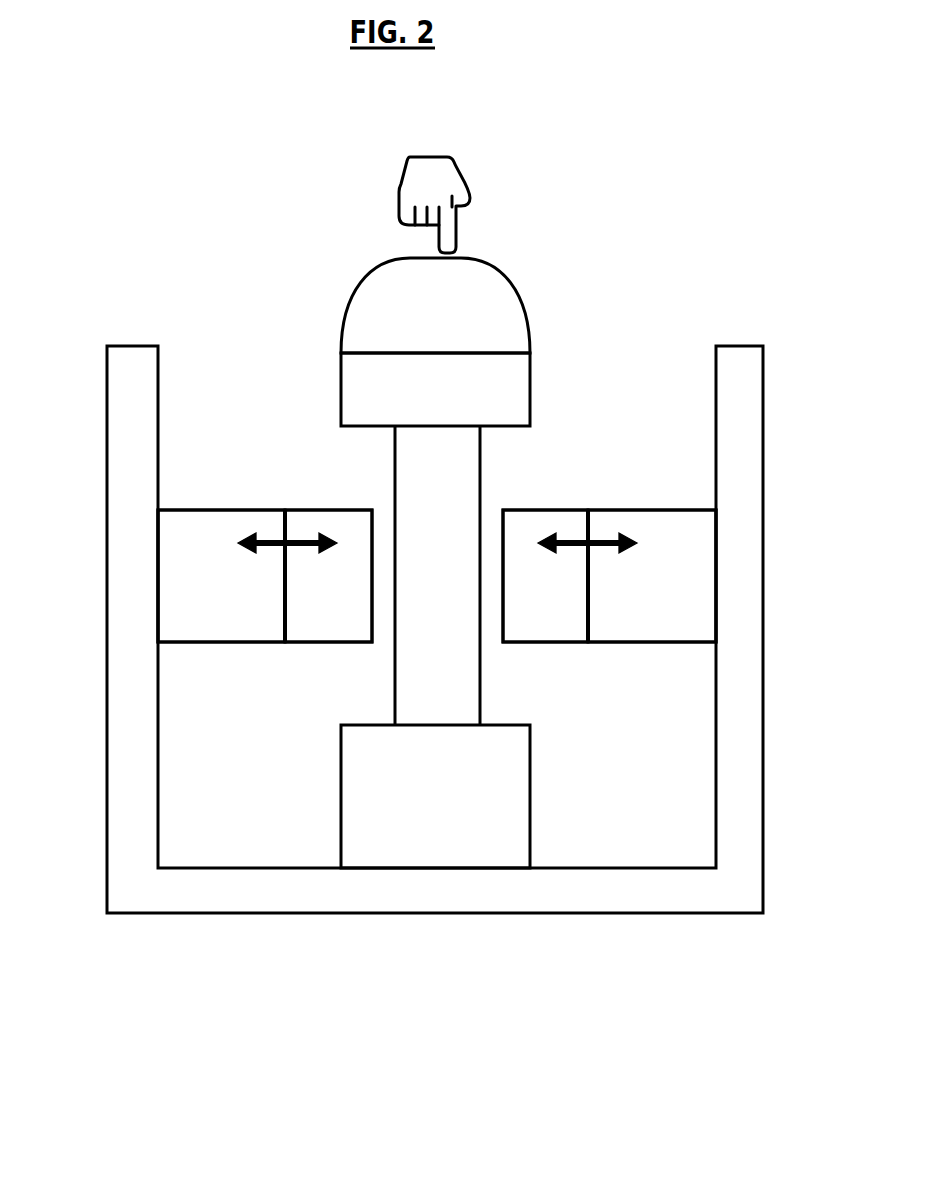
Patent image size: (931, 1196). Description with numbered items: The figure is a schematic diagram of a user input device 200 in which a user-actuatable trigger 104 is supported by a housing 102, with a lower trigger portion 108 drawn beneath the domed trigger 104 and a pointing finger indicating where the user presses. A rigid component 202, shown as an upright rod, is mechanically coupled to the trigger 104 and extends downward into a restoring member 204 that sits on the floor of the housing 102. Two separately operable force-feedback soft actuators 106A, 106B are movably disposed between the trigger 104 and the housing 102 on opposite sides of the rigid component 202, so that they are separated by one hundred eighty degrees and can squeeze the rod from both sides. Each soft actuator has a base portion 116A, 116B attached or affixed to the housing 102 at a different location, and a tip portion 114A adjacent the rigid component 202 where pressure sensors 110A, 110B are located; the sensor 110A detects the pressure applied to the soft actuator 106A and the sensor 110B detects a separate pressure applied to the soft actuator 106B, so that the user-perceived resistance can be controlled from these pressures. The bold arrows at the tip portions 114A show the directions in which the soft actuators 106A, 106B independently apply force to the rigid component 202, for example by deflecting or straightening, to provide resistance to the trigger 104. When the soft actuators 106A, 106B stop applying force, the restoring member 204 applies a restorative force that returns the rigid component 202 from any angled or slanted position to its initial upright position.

The user input device 200 is at (196, 202).
The housing 102 is at (267, 913).
The user-actuatable trigger 104 is at (435, 305).
The button base 108 is at (435, 389).
The rigid component 202 is at (437, 575).
The restoring member 204 is at (435, 796).
The primary force-feedback soft actuator 106A is at (221, 576).
The pressure sensor 110A is at (328, 576).
The tip portion 114A is at (281, 489).
The base portion 116A is at (172, 491).
The additional force-feedback soft actuator 106B is at (652, 576).
The pressure sensor 110B is at (545, 576).
The base portion 116B is at (702, 488).